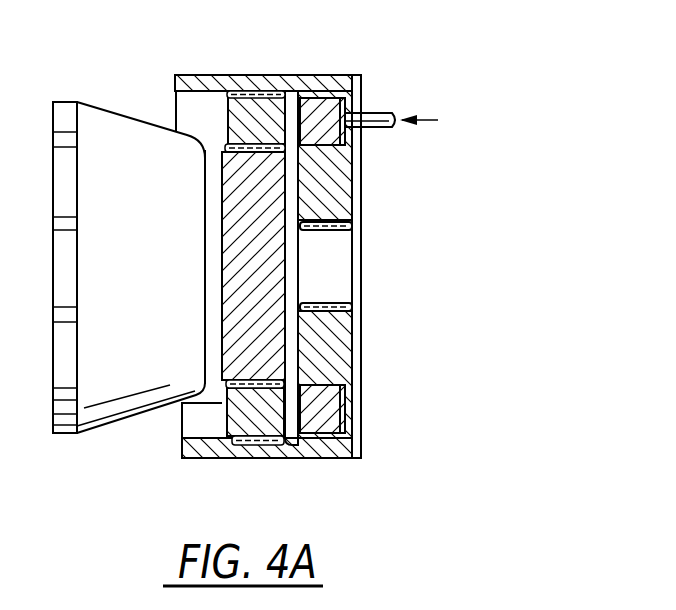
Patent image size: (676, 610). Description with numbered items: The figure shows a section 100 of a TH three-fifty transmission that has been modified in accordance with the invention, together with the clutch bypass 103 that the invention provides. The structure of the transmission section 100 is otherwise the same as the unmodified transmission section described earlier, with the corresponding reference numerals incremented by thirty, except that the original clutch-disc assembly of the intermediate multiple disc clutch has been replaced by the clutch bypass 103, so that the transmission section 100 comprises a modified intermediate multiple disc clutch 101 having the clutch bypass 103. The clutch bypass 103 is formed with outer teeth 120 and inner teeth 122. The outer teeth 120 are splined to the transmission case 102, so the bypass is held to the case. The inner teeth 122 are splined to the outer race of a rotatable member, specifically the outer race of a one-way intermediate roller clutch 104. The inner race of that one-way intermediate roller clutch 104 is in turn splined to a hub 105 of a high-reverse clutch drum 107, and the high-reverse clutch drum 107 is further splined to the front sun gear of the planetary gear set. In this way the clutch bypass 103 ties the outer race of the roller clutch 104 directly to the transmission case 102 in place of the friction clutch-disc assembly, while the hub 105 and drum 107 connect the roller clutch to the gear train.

The transmission section 100 is at (507, 28).
The intermediate multiple disc clutch 101 is at (380, 190).
The transmission case 102 is at (220, 27).
The clutch bypass 103 is at (227, 422).
The one-way intermediate roller clutch 104 is at (276, 300).
The hub 105 is at (213, 248).
The high-reverse clutch drum 107 is at (90, 103).
The outer teeth 120 is at (266, 447).
The inner teeth 122 is at (226, 389).